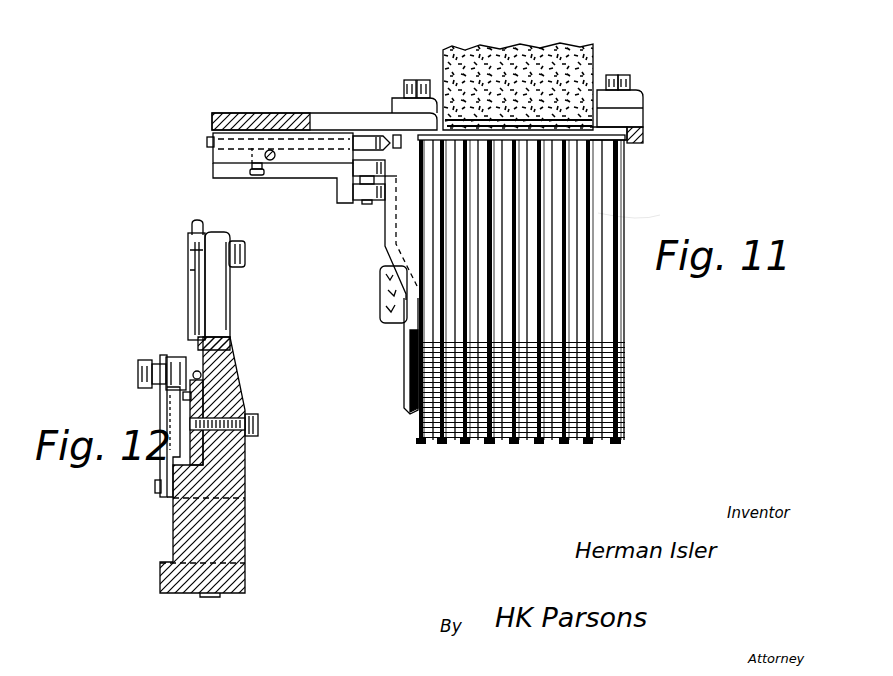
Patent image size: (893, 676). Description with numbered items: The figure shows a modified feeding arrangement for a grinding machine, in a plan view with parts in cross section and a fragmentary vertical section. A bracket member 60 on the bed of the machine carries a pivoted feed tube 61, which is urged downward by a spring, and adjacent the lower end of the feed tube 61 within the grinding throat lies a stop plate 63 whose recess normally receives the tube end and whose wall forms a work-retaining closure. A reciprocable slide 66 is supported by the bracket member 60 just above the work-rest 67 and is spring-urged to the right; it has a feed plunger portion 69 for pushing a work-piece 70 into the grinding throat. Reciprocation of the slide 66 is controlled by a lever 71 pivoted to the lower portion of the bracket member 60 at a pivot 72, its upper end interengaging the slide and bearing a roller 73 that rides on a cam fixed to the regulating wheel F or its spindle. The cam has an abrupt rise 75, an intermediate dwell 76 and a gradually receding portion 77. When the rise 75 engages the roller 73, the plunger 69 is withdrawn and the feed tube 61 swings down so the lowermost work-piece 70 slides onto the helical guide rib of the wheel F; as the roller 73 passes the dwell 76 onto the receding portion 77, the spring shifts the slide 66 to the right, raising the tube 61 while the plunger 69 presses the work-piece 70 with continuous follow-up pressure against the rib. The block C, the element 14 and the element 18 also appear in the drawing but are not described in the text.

In FIG. 11, the frame 14 is at (404, 225).
In FIG. 11, the fins 18 is at (598, 315).
In FIG. 12, the bracket member 60 is at (222, 534).
In FIG. 12, the feed tube 61 is at (196, 298).
In FIG. 11, the stop plate 63 is at (566, 190).
In FIG. 12, the stop plate 63 is at (215, 340).
In FIG. 11, the reciprocable slide 66 is at (228, 155).
In FIG. 12, the reciprocable slide 66 is at (190, 398).
In FIG. 12, the work-rest 67 is at (203, 450).
In FIG. 11, the feed plunger portion 69 is at (372, 133).
In FIG. 11, the work-piece 70 is at (598, 213).
In FIG. 12, the work-piece 70 is at (201, 375).
In FIG. 12, the lever 71 is at (162, 462).
In FIG. 12, the pivot 72 is at (172, 488).
In FIG. 11, the roller 73 is at (372, 192).
In FIG. 12, the roller 73 is at (150, 360).
In FIG. 11, the abrupt rise 75 is at (392, 262).
In FIG. 11, the intermediate dwell 76 is at (385, 208).
In FIG. 11, the gradually receding portion 77 is at (408, 353).
In FIG. 11, the core block C is at (598, 58).
In FIG. 11, the regulating wheel F is at (622, 181).